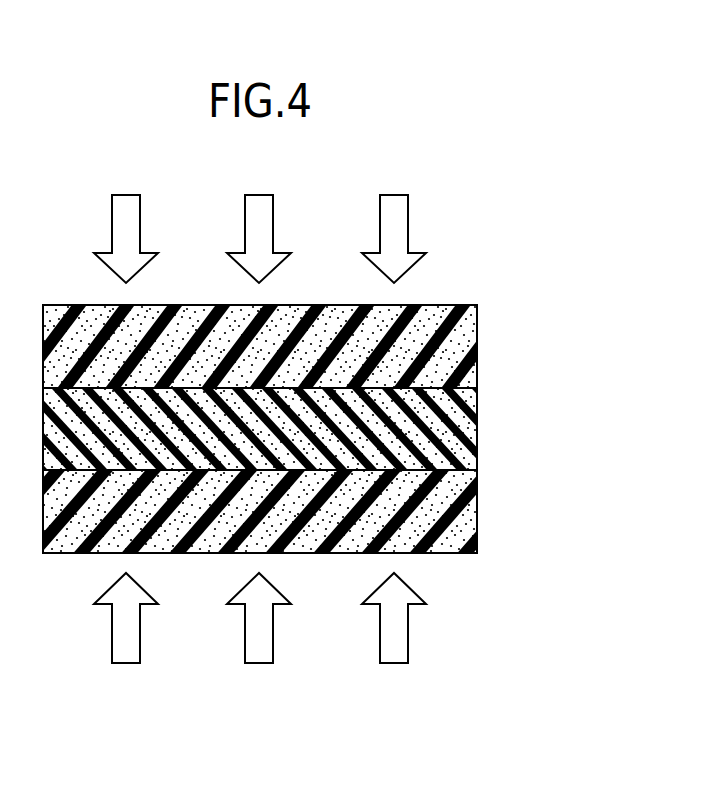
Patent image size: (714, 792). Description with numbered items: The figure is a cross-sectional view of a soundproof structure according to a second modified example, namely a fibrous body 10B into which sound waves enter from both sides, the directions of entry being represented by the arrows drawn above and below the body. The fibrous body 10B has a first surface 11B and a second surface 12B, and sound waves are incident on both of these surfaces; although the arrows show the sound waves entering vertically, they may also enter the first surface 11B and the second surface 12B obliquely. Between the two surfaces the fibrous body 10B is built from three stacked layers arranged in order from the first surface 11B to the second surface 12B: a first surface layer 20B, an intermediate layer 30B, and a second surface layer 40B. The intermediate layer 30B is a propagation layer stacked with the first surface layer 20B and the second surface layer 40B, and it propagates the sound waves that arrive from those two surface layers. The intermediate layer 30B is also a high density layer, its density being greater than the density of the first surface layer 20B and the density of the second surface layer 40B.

The fibrous body 10B is at (325, 429).
The first surface 11B is at (447, 304).
The second surface 12B is at (305, 569).
The first surface layer 20B is at (463, 347).
The intermediate layer 30B is at (463, 426).
The second surface layer 40B is at (463, 509).